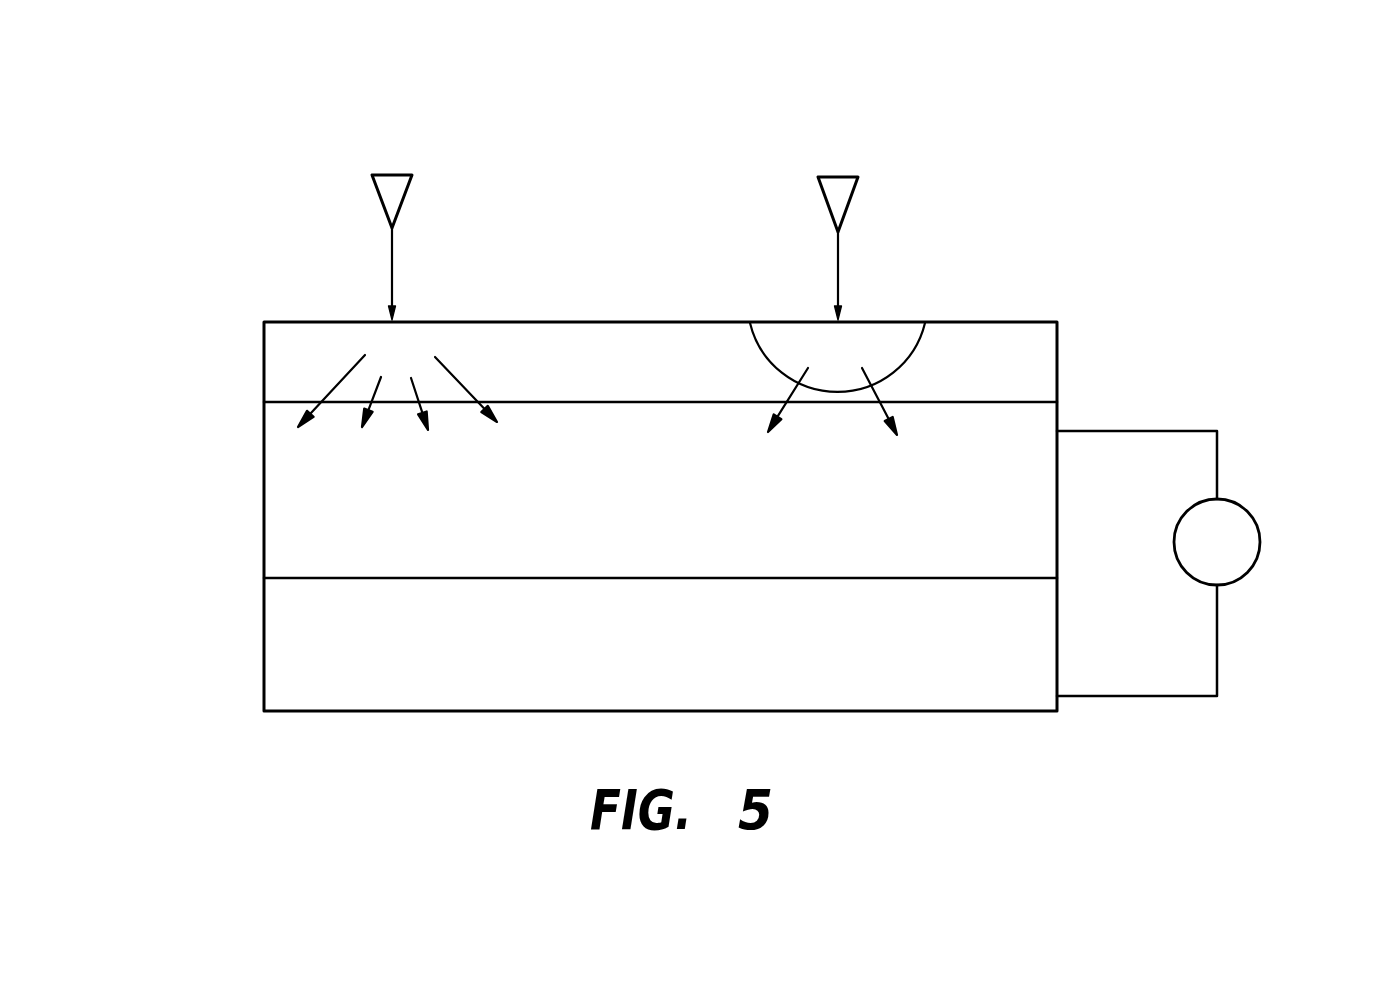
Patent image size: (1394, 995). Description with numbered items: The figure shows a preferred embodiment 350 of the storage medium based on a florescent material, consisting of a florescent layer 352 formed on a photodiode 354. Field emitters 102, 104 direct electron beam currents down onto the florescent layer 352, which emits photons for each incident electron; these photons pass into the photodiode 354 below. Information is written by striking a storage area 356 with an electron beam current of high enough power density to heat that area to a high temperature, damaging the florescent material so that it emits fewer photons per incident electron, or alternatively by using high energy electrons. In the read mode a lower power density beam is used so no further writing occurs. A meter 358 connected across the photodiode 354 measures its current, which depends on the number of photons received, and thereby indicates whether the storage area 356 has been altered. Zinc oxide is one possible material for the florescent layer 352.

The field emitter 102 is at (366, 162).
The field emitter 104 is at (818, 160).
The preferred embodiment 350 is at (1228, 160).
The florescent layer 352 is at (243, 378).
The photodiode 354 is at (208, 582).
The storage area 356 is at (892, 288).
The meter 358 is at (1268, 510).